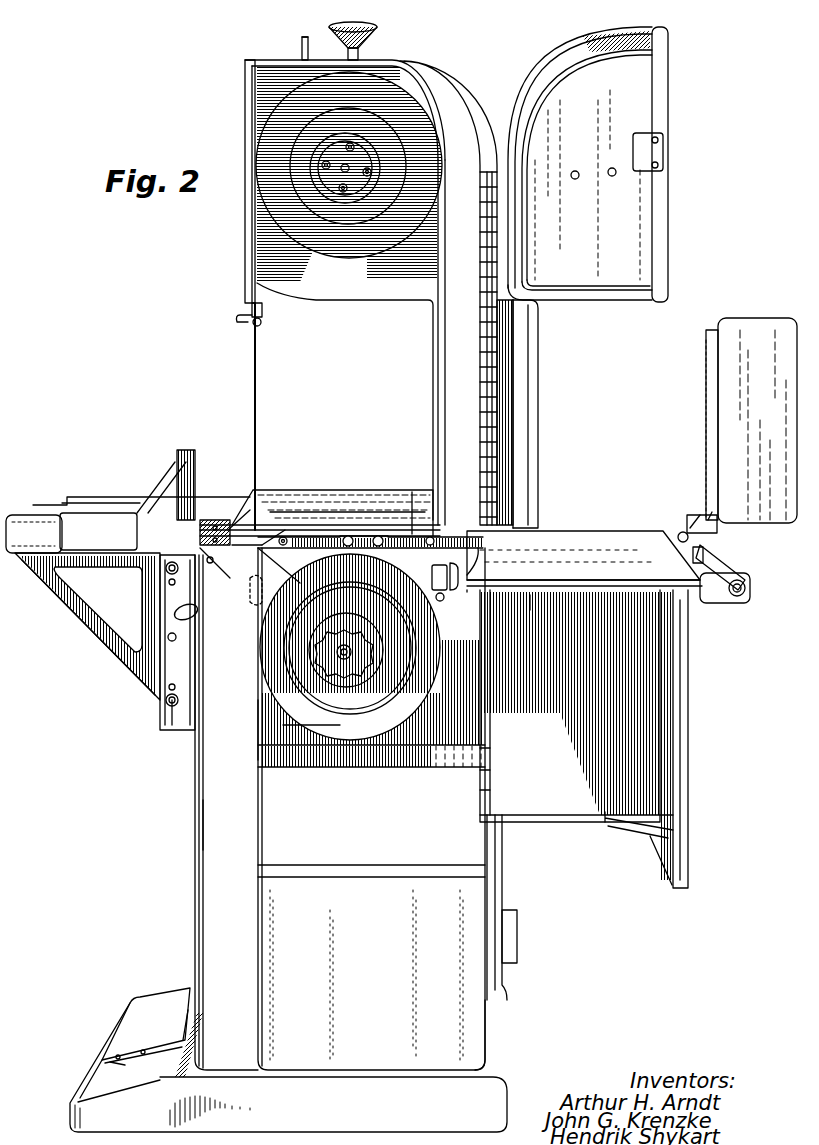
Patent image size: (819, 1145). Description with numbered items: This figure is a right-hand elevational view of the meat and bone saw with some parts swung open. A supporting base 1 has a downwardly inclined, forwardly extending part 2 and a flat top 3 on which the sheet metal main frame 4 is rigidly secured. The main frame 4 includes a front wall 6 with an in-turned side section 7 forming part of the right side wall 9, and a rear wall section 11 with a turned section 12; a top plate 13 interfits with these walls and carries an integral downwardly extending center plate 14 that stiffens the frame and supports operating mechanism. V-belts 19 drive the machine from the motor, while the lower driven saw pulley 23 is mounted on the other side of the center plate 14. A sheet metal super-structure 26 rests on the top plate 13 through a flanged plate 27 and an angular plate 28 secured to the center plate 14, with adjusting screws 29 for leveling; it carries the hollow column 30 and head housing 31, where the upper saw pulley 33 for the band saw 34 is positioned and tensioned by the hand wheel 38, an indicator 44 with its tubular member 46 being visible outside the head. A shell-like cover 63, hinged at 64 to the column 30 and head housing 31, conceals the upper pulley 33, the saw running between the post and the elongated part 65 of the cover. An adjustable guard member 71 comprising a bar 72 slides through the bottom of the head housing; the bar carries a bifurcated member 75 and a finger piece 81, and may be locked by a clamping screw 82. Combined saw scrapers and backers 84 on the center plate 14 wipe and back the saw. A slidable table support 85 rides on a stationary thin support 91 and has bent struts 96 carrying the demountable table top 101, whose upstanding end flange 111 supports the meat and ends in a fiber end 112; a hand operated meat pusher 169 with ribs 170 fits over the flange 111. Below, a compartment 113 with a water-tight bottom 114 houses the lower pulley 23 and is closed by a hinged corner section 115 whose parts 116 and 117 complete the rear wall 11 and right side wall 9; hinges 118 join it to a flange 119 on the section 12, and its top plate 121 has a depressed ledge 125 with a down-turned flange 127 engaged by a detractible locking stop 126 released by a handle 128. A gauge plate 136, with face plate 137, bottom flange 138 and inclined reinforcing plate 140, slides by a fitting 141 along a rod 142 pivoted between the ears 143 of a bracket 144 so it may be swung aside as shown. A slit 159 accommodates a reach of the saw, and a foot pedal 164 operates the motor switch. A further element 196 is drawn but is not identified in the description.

The supporting base 1 is at (514, 1036).
The downwardly inclined forwardly extending part 2 is at (145, 1000).
The flat top 3 is at (490, 1020).
The main frame structure 4 is at (193, 870).
The front wall 6 is at (258, 743).
The in-turned side section 7 is at (203, 825).
The right side wall 9 is at (510, 903).
The rear wall section 11 is at (505, 863).
The turned section 12 is at (503, 838).
The top plate 13 is at (300, 545).
The center plate 14 is at (283, 727).
The V-belts 19 is at (195, 720).
The lower driven saw pulley 23 is at (417, 693).
The sheet metal super-structure 26 is at (466, 112).
The flanged plate 27 is at (412, 540).
The angularly shaped plate 28 is at (285, 515).
The adjusting screws 29 is at (322, 652).
The hollow column 30 is at (445, 394).
The head housing 31 is at (428, 74).
The upper saw pulley 33 is at (408, 106).
The band saw 34 is at (258, 371).
The adjusting hand wheel 38 is at (358, 34).
The indicator 44 is at (300, 45).
The tubular member 46 is at (306, 36).
The cover 63 is at (538, 412).
The hinge 64 is at (490, 392).
The elongated part 65 is at (530, 458).
The adjustable guard member 71 is at (264, 313).
The bar 72 is at (245, 289).
The bifurcated member 75 is at (261, 323).
The finger piece 81 is at (236, 317).
The clamping screw 82 is at (197, 650).
The combined saw scrapers and backer 84 is at (276, 578).
The slidable table support 85 is at (90, 640).
The stationary support 91 is at (198, 675).
The struts 96 is at (128, 660).
The demountable table top 101 is at (92, 510).
The end flange 111 is at (23, 515).
The fiber end 112 is at (215, 520).
The compartment 113 is at (485, 754).
The bottom plate 114 is at (418, 865).
The corner section 115 is at (692, 670).
The rear section part 116 is at (608, 815).
The side section part 117 is at (688, 757).
The hinges 118 is at (500, 796).
The flange 119 is at (500, 776).
The top plate 121 is at (608, 531).
The depressed ledge 125 is at (556, 580).
The detractible locking stop 126 is at (248, 585).
The down-turned flange 127 is at (535, 600).
The handle 128 is at (198, 622).
The gauge plate 136 is at (742, 318).
The face plate 137 is at (770, 360).
The bottom flange 138 is at (706, 372).
The inclined reinforcing plate 140 is at (720, 537).
The fitting 141 is at (692, 559).
The rod 142 is at (740, 565).
The ears 143 is at (690, 530).
The bracket 144 is at (710, 518).
The slit 159 is at (372, 510).
The foot pedal 164 is at (125, 1020).
The hand operated meat pusher 169 is at (165, 470).
The ribs 170 is at (190, 452).
The bracket stud 196 is at (187, 570).